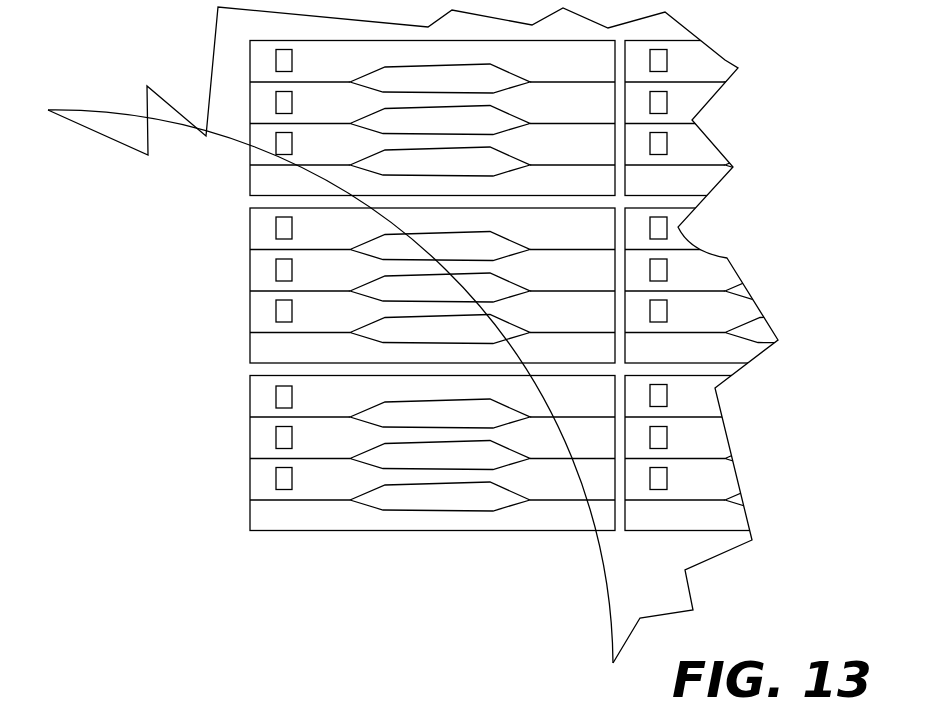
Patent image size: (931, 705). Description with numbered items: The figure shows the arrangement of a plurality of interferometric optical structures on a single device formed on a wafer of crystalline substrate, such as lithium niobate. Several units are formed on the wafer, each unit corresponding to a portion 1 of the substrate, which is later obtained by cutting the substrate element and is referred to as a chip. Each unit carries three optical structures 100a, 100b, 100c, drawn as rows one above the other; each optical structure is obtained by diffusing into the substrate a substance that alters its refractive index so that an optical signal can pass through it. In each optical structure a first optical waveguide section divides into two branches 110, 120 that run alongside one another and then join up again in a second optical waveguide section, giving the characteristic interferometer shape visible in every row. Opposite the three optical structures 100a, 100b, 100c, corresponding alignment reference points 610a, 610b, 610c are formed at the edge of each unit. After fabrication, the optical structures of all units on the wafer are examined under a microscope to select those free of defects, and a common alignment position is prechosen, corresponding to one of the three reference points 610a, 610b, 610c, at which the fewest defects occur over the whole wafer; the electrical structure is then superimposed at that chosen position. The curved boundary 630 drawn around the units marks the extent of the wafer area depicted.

The portion of crystalline substrate 1 is at (293, 517).
The optical structure 100a is at (532, 410).
The optical structure 100b is at (547, 466).
The optical structure 100c is at (446, 540).
The branch 110 is at (428, 485).
The branch 120 is at (462, 512).
The alignment reference point 610a is at (275, 391).
The alignment reference point 610b is at (275, 437).
The alignment reference point 610c is at (275, 480).
The wafer edge 630 is at (452, 704).